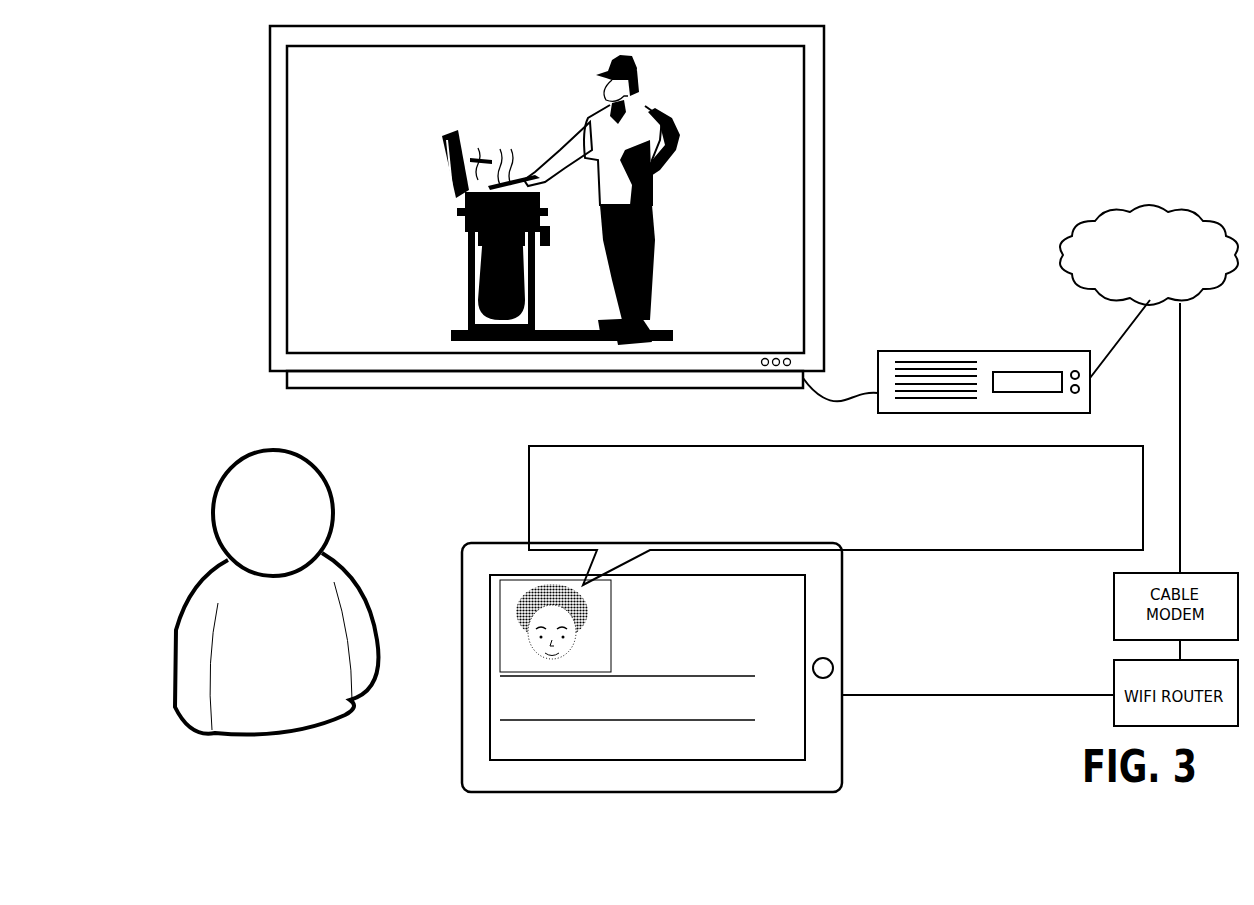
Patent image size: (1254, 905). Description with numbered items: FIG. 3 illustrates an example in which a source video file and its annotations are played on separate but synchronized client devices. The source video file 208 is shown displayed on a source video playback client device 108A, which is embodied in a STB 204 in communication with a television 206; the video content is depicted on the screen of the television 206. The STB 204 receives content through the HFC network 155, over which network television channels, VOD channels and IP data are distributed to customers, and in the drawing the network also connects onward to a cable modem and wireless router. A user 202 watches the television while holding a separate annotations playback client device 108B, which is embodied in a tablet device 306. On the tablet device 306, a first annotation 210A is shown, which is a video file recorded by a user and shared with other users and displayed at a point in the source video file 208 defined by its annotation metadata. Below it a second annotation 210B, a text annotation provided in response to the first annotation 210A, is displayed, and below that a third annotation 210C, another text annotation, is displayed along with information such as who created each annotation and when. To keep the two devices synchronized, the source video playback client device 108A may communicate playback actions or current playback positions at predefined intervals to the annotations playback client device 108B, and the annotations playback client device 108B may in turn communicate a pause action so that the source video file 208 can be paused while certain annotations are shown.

The source video playback client device 108A is at (997, 350).
The television 206 is at (824, 48).
The source video file 208 is at (350, 113).
The STB 204 is at (902, 351).
The HFC network 155 is at (1149, 255).
The user 202 is at (216, 566).
The annotations playback client device 108B is at (843, 608).
The tablet device 306 is at (843, 652).
The first annotation 210A is at (508, 595).
The second annotation 210B is at (500, 690).
The third annotation 210C is at (500, 743).